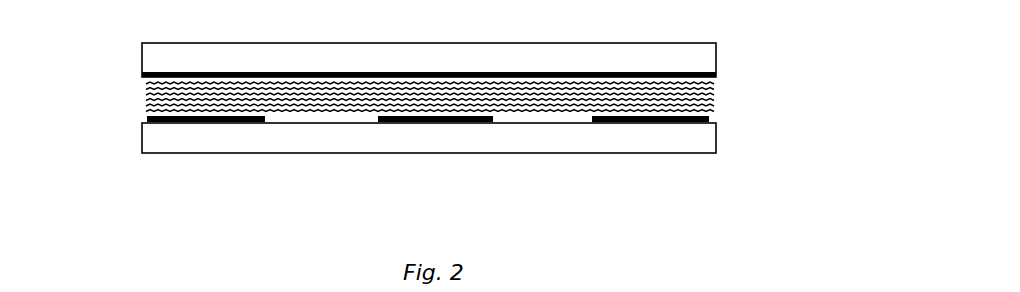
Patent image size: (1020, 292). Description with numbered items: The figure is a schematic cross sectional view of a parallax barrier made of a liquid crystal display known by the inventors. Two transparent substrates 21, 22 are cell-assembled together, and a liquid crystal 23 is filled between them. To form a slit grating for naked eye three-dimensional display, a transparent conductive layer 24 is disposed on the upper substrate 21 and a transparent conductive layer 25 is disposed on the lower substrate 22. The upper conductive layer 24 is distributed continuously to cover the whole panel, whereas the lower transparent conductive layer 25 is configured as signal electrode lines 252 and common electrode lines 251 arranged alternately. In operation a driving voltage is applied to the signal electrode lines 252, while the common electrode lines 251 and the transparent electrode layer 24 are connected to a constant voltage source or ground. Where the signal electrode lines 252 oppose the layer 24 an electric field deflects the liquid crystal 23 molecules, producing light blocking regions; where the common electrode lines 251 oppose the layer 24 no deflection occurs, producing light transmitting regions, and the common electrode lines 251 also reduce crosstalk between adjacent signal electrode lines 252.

The transparent substrate 21 is at (725, 53).
The transparent substrate 22 is at (725, 141).
The liquid crystal 23 is at (160, 101).
The transparent conductive layer 24 is at (717, 77).
The transparent conductive layer 25 is at (468, 168).
The common electrode lines 251 is at (443, 120).
The signal electrode lines 252 is at (230, 123).